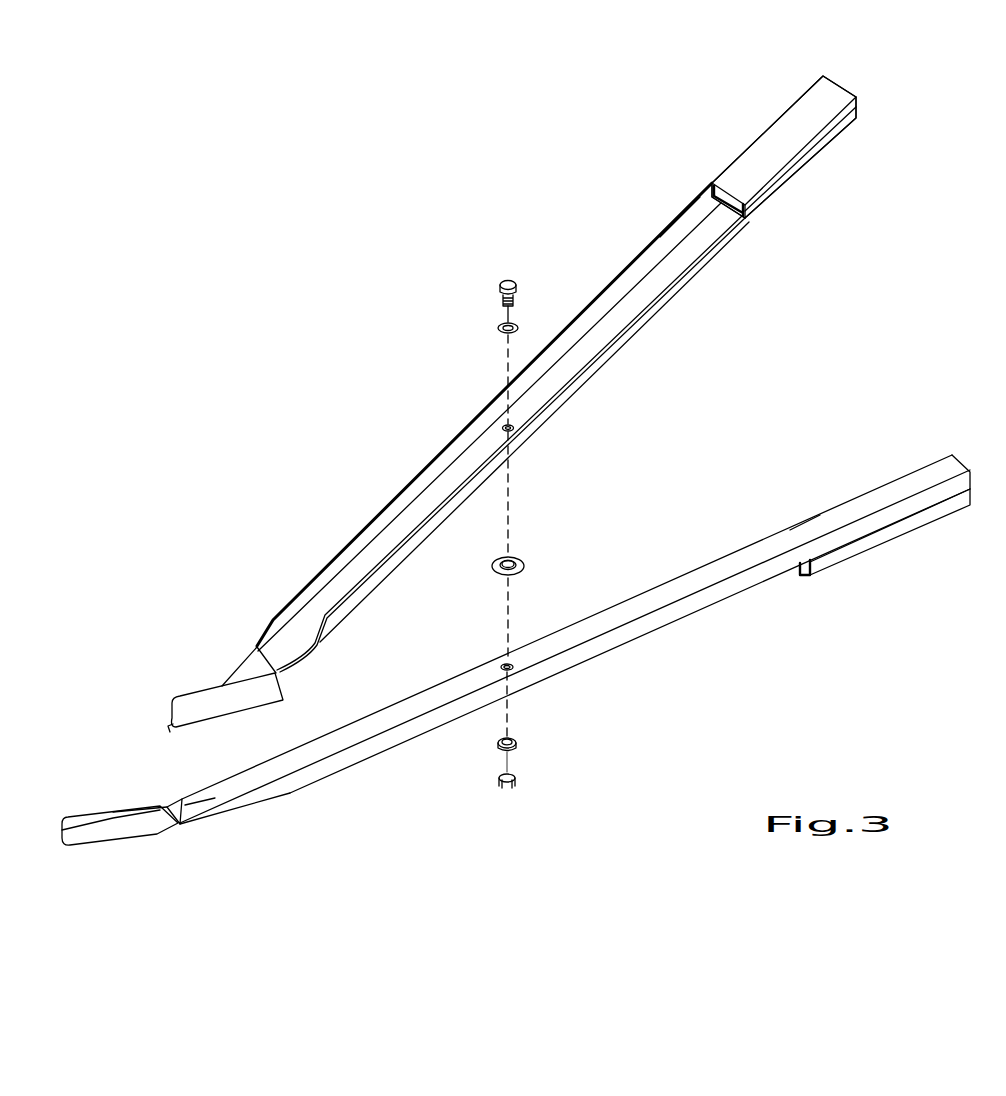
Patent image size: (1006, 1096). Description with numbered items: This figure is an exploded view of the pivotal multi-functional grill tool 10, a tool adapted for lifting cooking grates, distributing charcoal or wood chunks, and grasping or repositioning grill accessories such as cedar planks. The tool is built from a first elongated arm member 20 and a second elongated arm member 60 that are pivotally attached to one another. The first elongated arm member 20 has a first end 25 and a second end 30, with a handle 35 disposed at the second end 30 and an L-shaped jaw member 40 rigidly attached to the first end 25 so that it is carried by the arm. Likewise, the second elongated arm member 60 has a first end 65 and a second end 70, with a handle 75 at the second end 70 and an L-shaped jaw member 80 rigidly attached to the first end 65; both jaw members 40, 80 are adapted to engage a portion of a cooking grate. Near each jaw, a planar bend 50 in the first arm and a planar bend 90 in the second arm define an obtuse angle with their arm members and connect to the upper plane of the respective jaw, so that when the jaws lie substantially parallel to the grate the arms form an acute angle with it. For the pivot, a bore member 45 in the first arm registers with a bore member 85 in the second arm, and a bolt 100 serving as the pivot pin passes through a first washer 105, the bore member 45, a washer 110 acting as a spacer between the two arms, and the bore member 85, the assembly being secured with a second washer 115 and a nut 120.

The pivotal multi-functional grill tool 10 is at (362, 360).
The first elongated arm member 20 is at (503, 433).
The first end 25 is at (288, 652).
The second end 30 is at (697, 203).
The handle 35 is at (772, 145).
The jaw member 40 is at (187, 705).
The bore member 45 is at (538, 410).
The planar bend 50 is at (258, 660).
The second elongated arm member 60 is at (546, 639).
The first end 65 is at (188, 807).
The second end 70 is at (752, 557).
The handle 75 is at (883, 537).
The jaw member 80 is at (75, 812).
The bore member 85 is at (505, 664).
The planar bend 90 is at (165, 806).
The bolt 100 is at (506, 278).
The first washer 105 is at (500, 325).
The washer 110 is at (517, 564).
The second washer 115 is at (517, 740).
The nut 120 is at (513, 778).